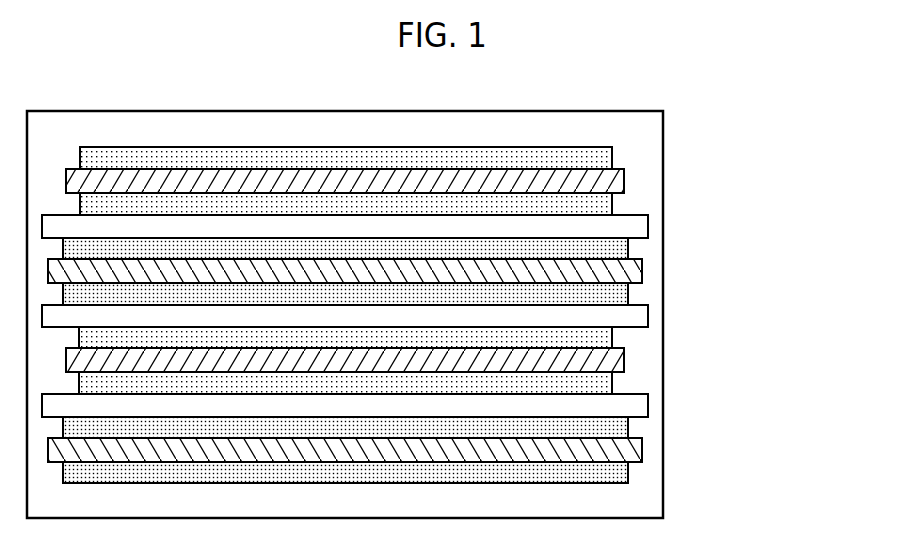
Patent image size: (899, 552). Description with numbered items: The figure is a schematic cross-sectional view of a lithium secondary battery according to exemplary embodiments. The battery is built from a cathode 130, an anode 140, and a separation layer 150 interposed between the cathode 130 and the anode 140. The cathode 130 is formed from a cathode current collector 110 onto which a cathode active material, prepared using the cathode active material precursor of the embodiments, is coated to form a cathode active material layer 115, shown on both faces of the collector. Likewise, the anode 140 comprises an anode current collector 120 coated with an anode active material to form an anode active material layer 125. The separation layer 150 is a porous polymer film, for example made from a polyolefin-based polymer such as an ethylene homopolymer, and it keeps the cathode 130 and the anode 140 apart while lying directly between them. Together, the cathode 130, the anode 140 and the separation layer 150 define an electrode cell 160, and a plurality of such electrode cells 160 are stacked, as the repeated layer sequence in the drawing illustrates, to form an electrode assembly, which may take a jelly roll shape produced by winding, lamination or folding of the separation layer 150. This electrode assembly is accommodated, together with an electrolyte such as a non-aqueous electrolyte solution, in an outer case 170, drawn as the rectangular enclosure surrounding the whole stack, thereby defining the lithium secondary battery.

The cathode current collector 110 is at (625, 179).
The cathode active material layer 115 is at (612, 152).
The anode current collector 120 is at (642, 270).
The anode active material layer 125 is at (628, 243).
The cathode 130 is at (434, 270).
The anode 140 is at (425, 360).
The separation layer 150 is at (648, 223).
The electrode cell 160 is at (451, 315).
The outer case 170 is at (663, 448).